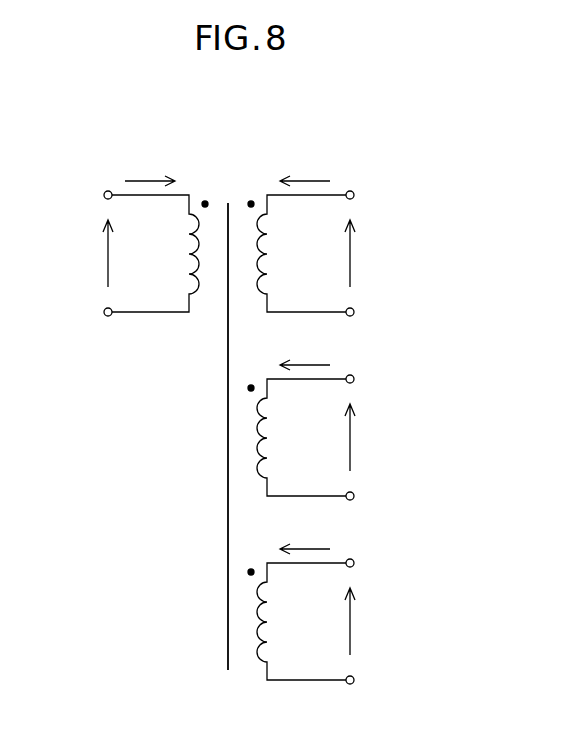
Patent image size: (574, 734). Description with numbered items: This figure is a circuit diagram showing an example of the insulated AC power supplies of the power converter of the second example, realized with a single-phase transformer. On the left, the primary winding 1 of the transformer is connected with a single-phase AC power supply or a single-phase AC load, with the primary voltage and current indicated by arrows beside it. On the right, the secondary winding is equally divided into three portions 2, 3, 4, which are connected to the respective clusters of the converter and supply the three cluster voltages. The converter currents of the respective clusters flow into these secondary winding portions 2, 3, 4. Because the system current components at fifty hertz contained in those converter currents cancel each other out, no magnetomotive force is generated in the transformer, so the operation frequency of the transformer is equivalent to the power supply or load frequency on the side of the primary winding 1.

The primary winding N1 1 is at (140, 234).
The secondary winding N2/3 (u-v) 2 is at (320, 234).
The secondary winding N2/3 (v-w) 3 is at (321, 418).
The secondary winding N2/3 (w-u) 4 is at (321, 602).